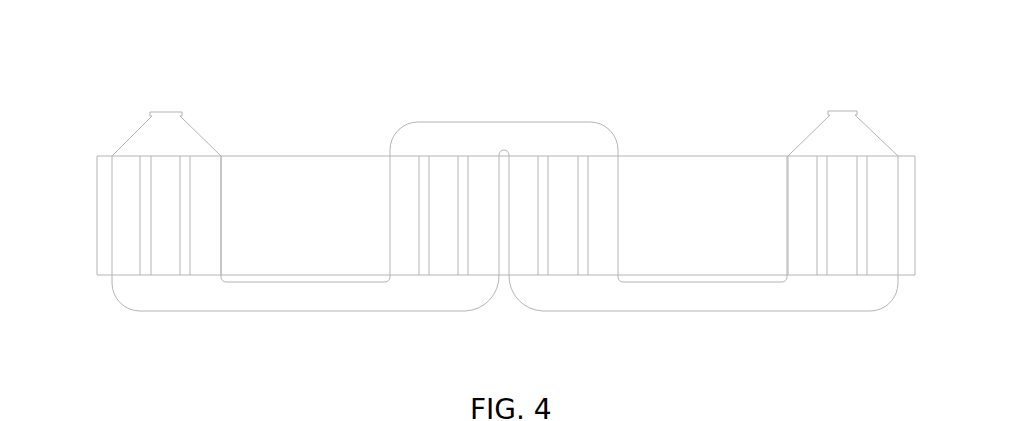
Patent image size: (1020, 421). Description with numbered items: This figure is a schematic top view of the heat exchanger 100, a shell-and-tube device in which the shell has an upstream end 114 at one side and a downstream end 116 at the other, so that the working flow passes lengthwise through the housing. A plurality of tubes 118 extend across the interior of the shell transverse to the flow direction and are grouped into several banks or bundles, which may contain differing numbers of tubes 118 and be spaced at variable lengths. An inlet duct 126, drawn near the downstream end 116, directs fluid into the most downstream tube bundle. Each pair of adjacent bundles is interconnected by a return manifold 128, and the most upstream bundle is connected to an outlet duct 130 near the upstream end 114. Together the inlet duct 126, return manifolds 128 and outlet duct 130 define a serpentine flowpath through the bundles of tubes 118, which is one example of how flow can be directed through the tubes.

The heat exchanger 100 is at (494, 74).
The upstream end 114 is at (110, 335).
The downstream end 116 is at (883, 335).
The tubes 118 is at (211, 203).
The inlet duct 126 is at (842, 113).
The return manifolds 128 is at (440, 143).
The outlet duct 130 is at (170, 117).